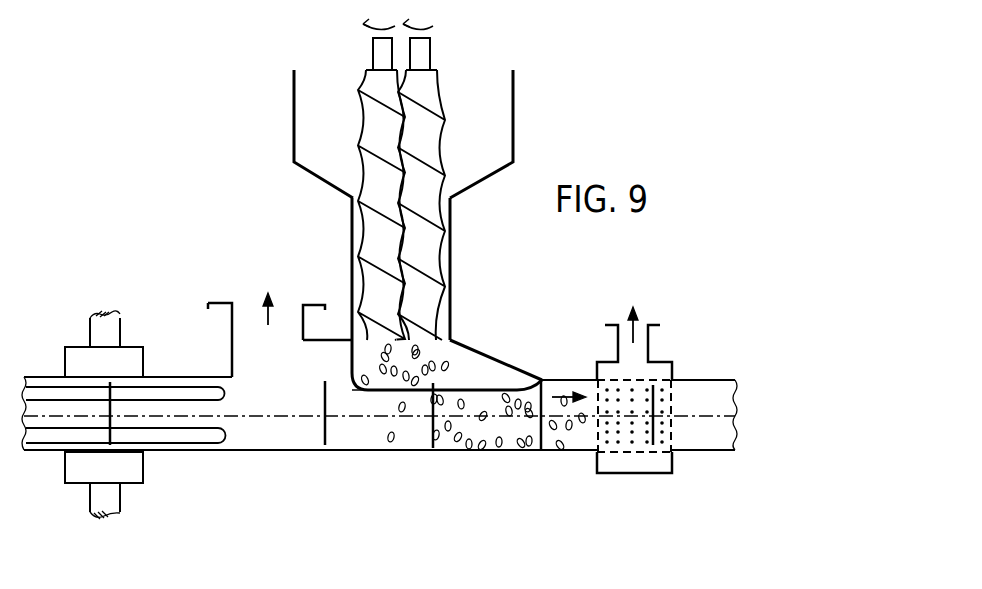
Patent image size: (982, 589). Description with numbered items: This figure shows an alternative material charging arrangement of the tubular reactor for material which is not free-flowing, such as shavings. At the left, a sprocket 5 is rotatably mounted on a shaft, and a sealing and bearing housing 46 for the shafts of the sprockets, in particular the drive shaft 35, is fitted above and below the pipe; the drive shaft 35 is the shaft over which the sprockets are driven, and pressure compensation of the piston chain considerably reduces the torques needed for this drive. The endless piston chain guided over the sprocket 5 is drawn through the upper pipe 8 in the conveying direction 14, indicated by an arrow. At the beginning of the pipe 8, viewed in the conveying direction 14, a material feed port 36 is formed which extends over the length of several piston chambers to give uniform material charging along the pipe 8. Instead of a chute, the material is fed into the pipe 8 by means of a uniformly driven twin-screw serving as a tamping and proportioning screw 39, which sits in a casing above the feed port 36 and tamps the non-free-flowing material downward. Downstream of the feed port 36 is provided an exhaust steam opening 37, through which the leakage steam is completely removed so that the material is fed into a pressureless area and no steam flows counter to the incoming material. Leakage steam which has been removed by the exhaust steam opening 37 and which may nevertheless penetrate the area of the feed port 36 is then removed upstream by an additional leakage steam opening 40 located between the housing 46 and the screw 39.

The sprocket 5 is at (178, 435).
The upper pipe 8 is at (463, 452).
The conveying direction 14 is at (563, 393).
The drive shaft 35 is at (108, 518).
The material feed port 36 is at (478, 383).
The exhaust steam opening 37 is at (650, 375).
The tamping and proportioning screw 39 is at (452, 262).
The additional leakage steam opening 40 is at (283, 332).
The sealing and bearing housing 46 is at (133, 472).